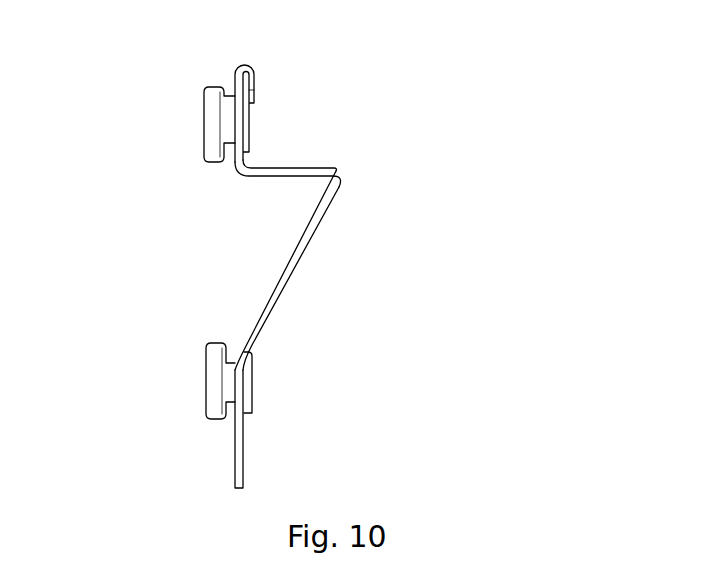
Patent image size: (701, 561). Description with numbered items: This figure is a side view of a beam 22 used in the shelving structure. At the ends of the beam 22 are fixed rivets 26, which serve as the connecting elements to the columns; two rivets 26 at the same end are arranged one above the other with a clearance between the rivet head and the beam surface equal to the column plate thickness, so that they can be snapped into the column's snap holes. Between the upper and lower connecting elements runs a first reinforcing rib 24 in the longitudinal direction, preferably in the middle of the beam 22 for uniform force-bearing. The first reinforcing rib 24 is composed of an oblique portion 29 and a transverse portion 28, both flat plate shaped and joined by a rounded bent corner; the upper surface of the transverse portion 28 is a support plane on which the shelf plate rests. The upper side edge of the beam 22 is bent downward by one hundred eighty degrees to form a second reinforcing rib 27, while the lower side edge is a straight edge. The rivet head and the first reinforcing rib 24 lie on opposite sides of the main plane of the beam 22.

The beam 22 is at (243, 452).
The first reinforcing rib 24 is at (472, 72).
The rivet 26 is at (212, 382).
The second reinforcing rib 27 is at (252, 88).
The transverse portion 28 is at (297, 168).
The oblique portion 29 is at (295, 270).